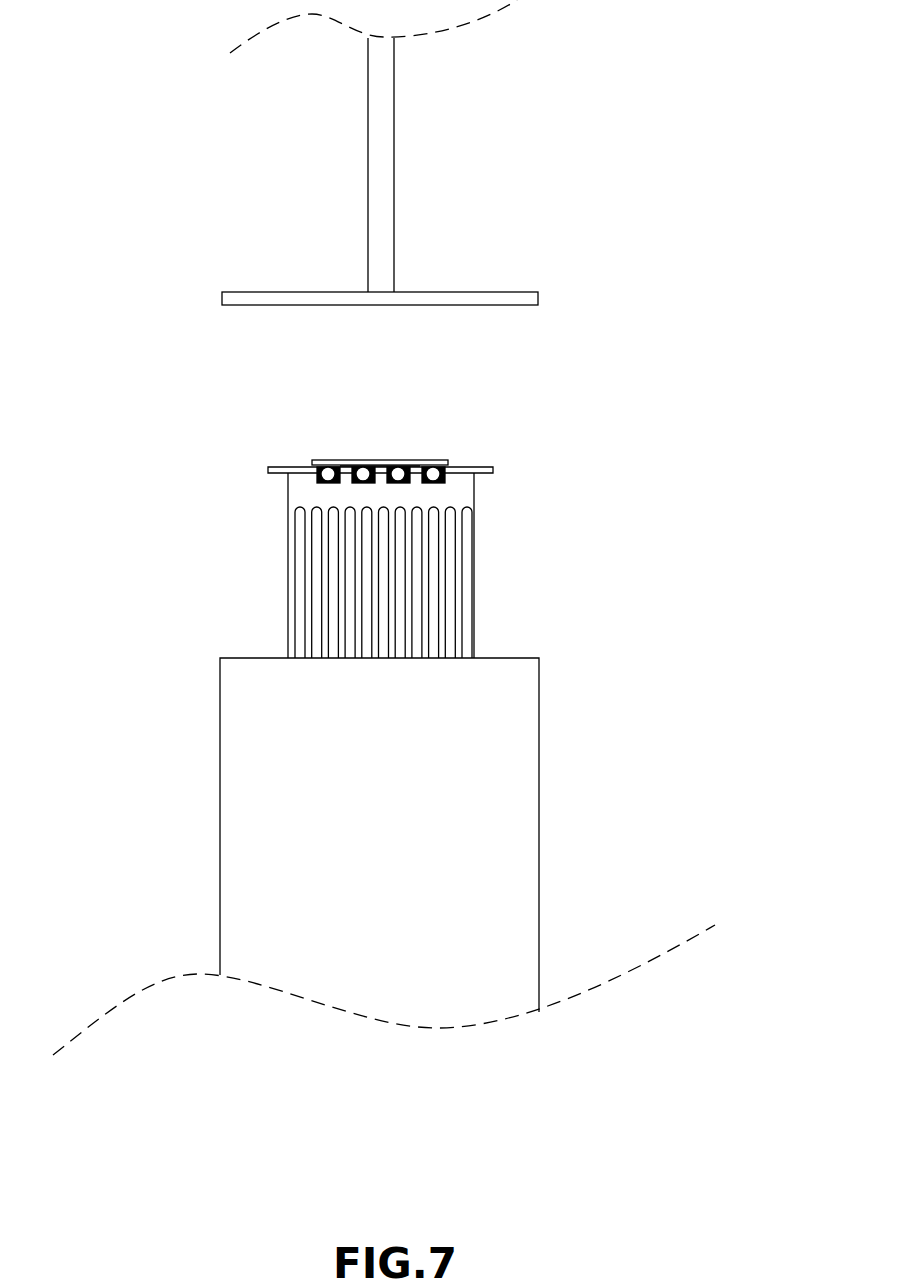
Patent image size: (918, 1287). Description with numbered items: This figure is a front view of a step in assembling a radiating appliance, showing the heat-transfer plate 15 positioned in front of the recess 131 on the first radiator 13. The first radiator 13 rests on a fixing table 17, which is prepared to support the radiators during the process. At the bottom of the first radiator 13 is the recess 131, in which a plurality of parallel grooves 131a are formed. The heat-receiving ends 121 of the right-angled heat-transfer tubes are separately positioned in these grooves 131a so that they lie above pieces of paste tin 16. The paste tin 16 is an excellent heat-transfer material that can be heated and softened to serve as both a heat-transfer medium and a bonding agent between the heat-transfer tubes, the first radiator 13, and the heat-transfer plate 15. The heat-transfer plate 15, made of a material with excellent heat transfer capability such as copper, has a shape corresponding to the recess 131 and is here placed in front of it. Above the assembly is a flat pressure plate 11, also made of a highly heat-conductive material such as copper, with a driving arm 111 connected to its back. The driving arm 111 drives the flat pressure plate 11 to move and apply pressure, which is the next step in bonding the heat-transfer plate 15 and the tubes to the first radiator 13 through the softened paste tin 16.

The flat pressure plate 11 is at (510, 300).
The driving arm 111 is at (383, 222).
The first radiator 13 is at (493, 472).
The recess 131 is at (313, 462).
The grooves 131a is at (437, 483).
The heat-receiving ends 121 is at (447, 464).
The heat-transfer plate 15 is at (403, 463).
The paste tin 16 is at (340, 461).
The fixing table 17 is at (518, 692).